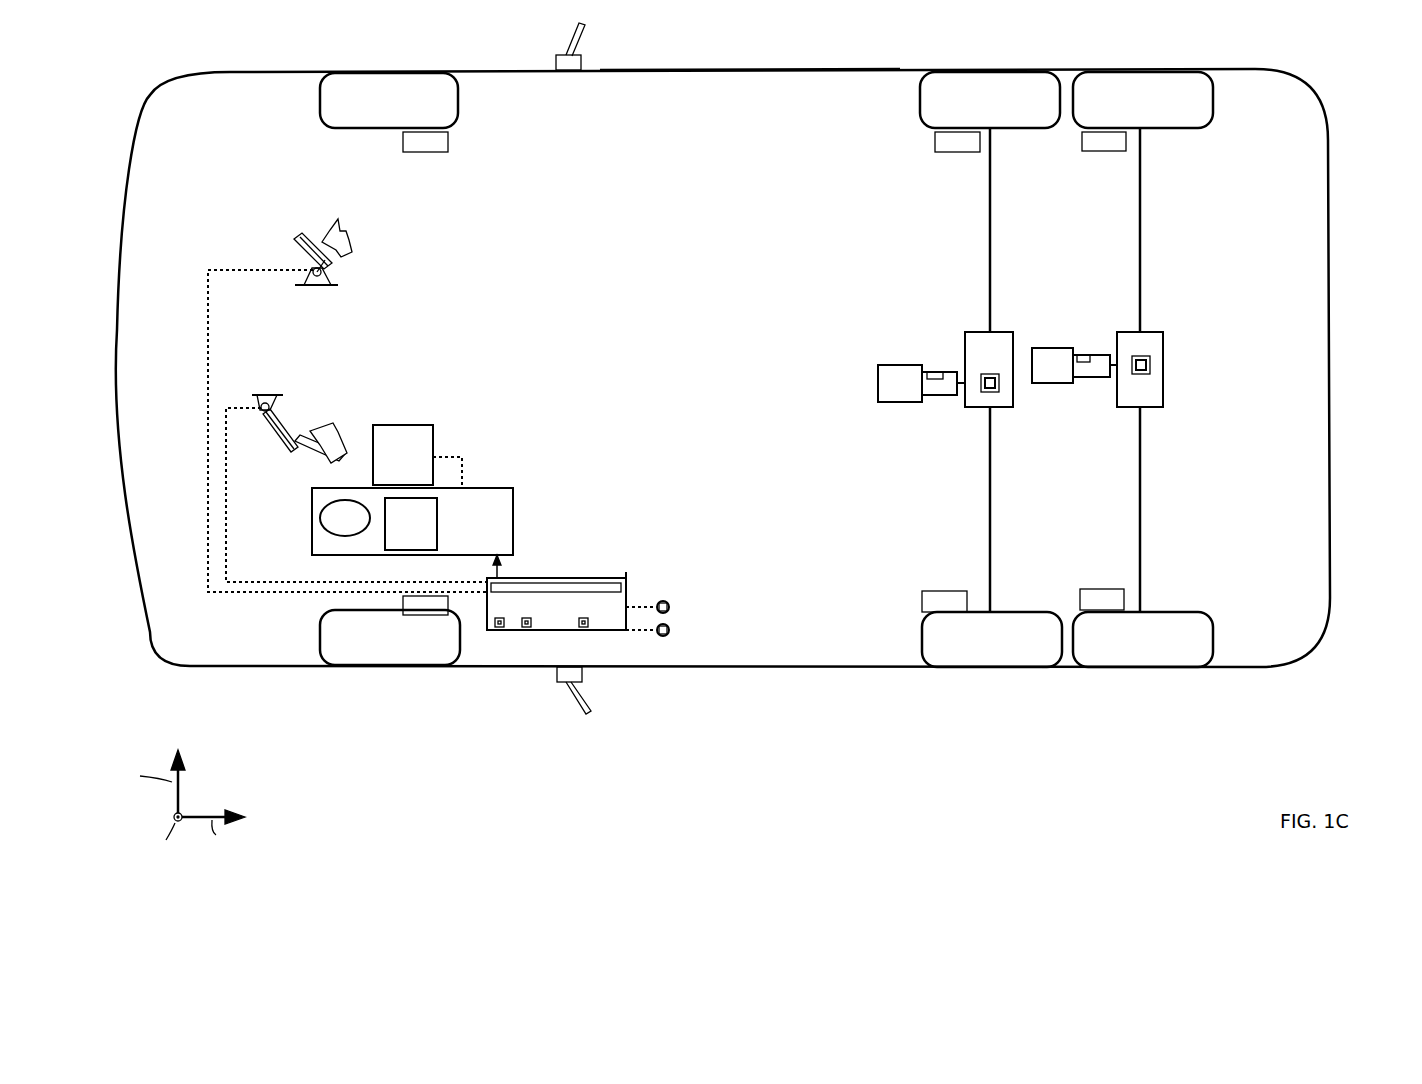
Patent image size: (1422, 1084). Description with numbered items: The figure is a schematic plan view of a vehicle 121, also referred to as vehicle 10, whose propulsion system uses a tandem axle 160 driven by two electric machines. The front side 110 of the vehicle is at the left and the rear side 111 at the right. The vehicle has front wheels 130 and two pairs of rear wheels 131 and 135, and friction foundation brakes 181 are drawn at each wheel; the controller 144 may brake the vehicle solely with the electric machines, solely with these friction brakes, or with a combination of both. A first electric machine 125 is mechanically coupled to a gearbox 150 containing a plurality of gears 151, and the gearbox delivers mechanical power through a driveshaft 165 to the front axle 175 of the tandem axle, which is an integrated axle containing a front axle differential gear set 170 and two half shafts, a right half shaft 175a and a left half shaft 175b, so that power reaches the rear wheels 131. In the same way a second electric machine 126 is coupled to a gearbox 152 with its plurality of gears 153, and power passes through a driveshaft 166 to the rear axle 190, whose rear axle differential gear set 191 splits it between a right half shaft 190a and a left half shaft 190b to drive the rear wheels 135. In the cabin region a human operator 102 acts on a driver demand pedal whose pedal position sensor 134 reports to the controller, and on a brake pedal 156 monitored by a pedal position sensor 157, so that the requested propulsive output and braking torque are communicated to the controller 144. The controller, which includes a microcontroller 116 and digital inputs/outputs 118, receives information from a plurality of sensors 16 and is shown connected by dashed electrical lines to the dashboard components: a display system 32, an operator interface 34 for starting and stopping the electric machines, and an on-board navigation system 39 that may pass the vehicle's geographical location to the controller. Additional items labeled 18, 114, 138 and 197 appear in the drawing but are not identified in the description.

The vehicle 10 is at (923, 70).
The sensors 16 is at (666, 607).
The communication connector 18 is at (666, 630).
The display system 32 is at (345, 518).
The operator interface 34 is at (411, 524).
The on-board navigation system 39 is at (403, 455).
The human operator 102 is at (260, 113).
The front side 110 is at (84, 160).
The rear side 111 is at (1396, 102).
The power port 114 is at (499, 628).
The microcontroller 116 is at (530, 628).
The digital inputs/outputs 118 is at (609, 593).
The vehicle 121 is at (712, 68).
The first electric machine 125 is at (886, 383).
The second electric machine 126 is at (1064, 368).
The front wheels 130 is at (395, 296).
The rear wheels 131 is at (987, 88).
The pedal position sensor 134 is at (330, 272).
The rear wheels 135 is at (1133, 82).
The coordinate axes 138 is at (208, 760).
The controller 144 is at (556, 601).
The gearbox 150 is at (944, 390).
The gears 151 is at (934, 372).
The gearbox 152 is at (1093, 373).
The gears 153 is at (1085, 357).
The brake pedal 156 is at (291, 455).
The pedal position sensor 157 is at (262, 410).
The tandem axle 160 is at (920, 192).
The driveshaft 165 is at (962, 378).
The driveshaft 166 is at (1113, 362).
The front axle differential gear set 170 is at (996, 390).
The front axle 175 is at (975, 345).
The right half shaft 175a is at (992, 262).
The left half shaft 175b is at (990, 520).
The friction foundation brakes 181 is at (764, 372).
The rear axle 190 is at (1169, 419).
The right half shaft 190a is at (1142, 262).
The left half shaft 190b is at (1140, 520).
The rear axle differential gear set 191 is at (1152, 365).
The rear section 197 is at (1240, 138).